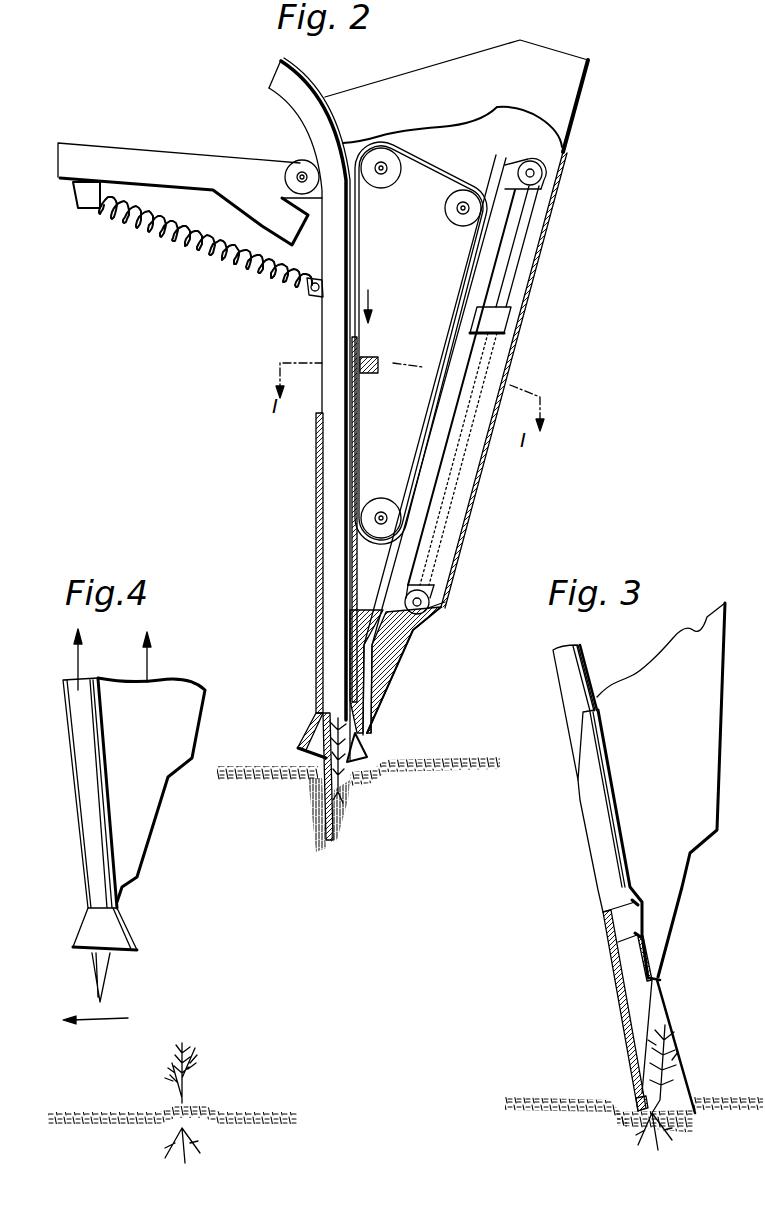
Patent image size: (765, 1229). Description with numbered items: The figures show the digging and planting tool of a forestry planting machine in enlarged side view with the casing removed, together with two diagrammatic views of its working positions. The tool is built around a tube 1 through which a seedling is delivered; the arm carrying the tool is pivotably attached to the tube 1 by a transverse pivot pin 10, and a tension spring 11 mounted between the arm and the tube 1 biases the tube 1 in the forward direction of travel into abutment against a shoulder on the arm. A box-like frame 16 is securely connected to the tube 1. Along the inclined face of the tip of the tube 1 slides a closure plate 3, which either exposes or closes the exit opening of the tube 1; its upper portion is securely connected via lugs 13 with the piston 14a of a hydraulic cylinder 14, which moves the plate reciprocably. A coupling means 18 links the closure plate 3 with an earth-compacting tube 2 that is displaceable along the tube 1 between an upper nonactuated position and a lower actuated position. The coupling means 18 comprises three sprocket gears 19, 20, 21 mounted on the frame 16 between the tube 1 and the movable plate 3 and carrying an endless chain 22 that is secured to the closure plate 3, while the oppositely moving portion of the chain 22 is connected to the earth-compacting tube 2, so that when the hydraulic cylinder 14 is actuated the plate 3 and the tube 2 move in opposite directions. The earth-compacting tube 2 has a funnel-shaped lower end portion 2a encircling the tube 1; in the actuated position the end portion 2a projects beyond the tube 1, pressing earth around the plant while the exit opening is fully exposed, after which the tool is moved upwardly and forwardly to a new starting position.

In FIG. 2, the tube 1 is at (326, 330).
In FIG. 4, the tube 1 is at (95, 970).
In FIG. 3, the tube 1 is at (572, 720).
In FIG. 2, the earth-compacting tube 2 is at (317, 595).
In FIG. 4, the earth-compacting tube 2 is at (93, 853).
In FIG. 3, the earth-compacting tube 2 is at (597, 853).
In FIG. 2, the lower end portion 2a is at (306, 744).
In FIG. 3, the lower end portion 2a is at (637, 1103).
In FIG. 2, the closure plate 3 is at (372, 678).
In FIG. 2, the transverse pivot pin 10 is at (298, 176).
In FIG. 2, the tension spring 11 is at (183, 253).
In FIG. 2, the lugs 13 is at (520, 181).
In FIG. 2, the hydraulic cylinder 14 is at (478, 367).
In FIG. 2, the piston 14a is at (517, 243).
In FIG. 2, the box-like frame 16 is at (562, 78).
In FIG. 4, the box-like frame 16 is at (140, 802).
In FIG. 3, the box-like frame 16 is at (693, 747).
In FIG. 2, the coupling means 18 is at (440, 142).
In FIG. 2, the sprocket gear 19 is at (373, 156).
In FIG. 2, the sprocket gear 20 is at (458, 222).
In FIG. 2, the sprocket gear 21 is at (370, 523).
In FIG. 2, the endless chain 22 is at (457, 173).